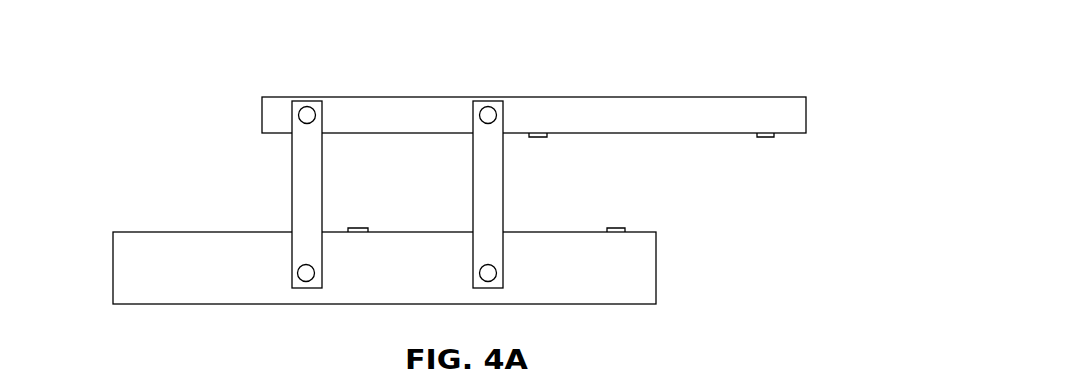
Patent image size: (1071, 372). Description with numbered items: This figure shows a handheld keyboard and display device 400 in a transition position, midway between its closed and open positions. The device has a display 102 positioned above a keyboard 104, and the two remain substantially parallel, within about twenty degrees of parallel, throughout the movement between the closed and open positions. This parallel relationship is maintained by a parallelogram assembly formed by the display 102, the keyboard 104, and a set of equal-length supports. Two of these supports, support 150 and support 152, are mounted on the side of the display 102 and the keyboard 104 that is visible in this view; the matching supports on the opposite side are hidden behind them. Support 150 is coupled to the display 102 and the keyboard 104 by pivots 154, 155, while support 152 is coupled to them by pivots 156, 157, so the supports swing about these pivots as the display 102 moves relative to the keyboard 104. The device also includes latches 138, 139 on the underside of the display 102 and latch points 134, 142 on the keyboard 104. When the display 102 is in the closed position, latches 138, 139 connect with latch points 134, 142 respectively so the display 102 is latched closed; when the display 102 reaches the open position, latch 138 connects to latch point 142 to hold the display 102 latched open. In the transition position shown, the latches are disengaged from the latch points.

The handheld keyboard and display device 400 is at (225, 56).
The display 102 is at (806, 103).
The keyboard 104 is at (656, 292).
The latch point 134 is at (361, 228).
The latch 138 is at (544, 137).
The latch 139 is at (769, 137).
The latch point 142 is at (618, 228).
The support 150 is at (315, 165).
The support 152 is at (492, 145).
The pivot 154 is at (307, 115).
The pivot 155 is at (306, 273).
The pivot 156 is at (488, 115).
The pivot 157 is at (488, 273).